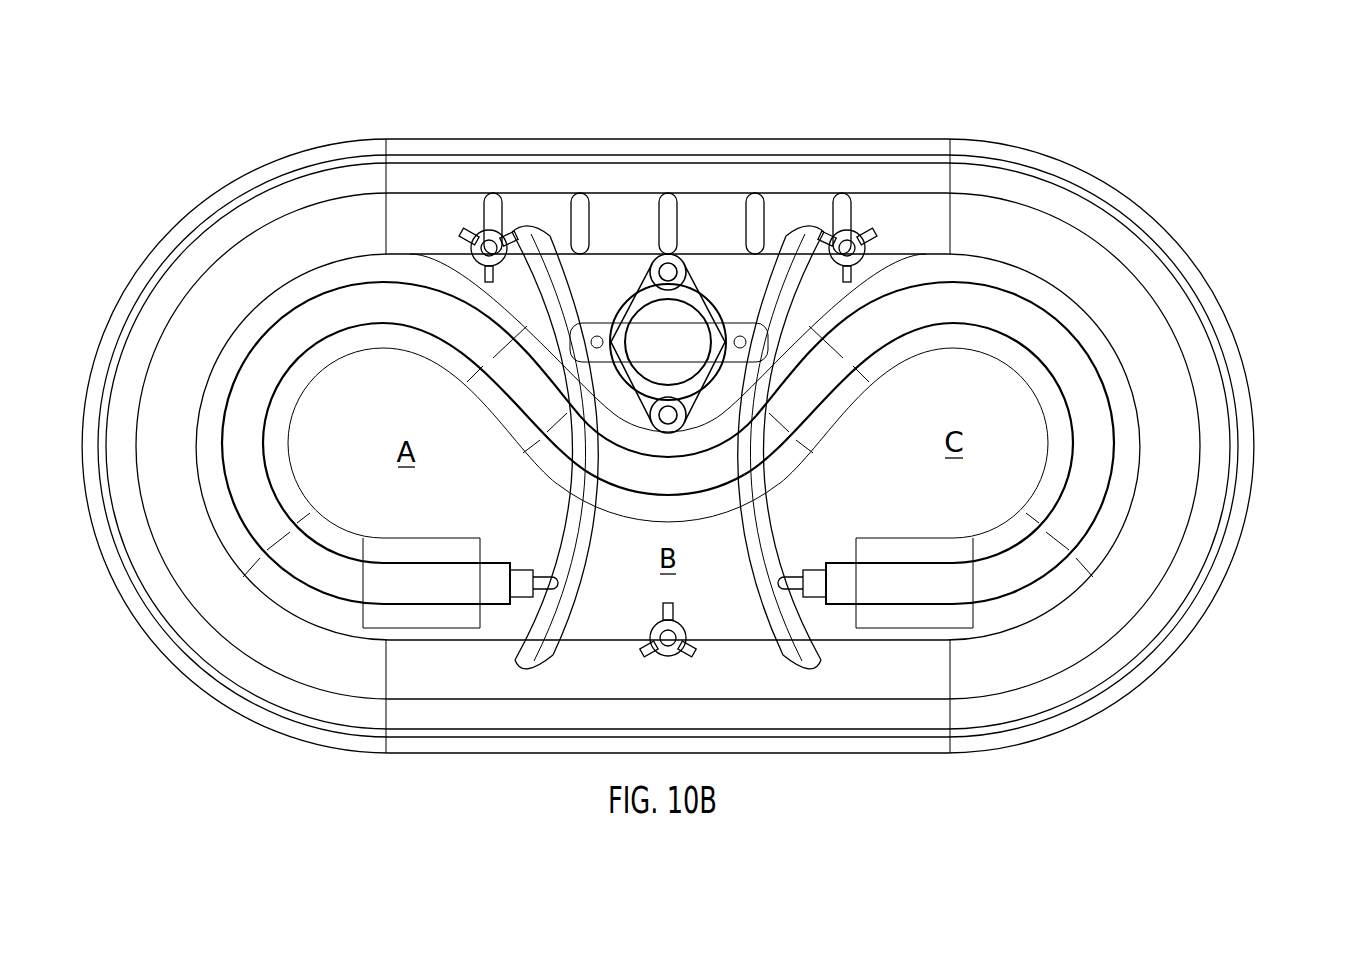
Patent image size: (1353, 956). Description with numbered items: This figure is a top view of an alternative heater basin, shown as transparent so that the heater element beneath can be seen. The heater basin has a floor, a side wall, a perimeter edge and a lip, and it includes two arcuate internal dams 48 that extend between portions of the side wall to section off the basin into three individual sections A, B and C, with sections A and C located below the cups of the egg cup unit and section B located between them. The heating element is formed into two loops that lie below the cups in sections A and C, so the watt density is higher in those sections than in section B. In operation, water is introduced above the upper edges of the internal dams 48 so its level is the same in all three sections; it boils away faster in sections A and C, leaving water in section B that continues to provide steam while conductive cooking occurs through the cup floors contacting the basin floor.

The arcuate internal dam 48 is at (540, 630).